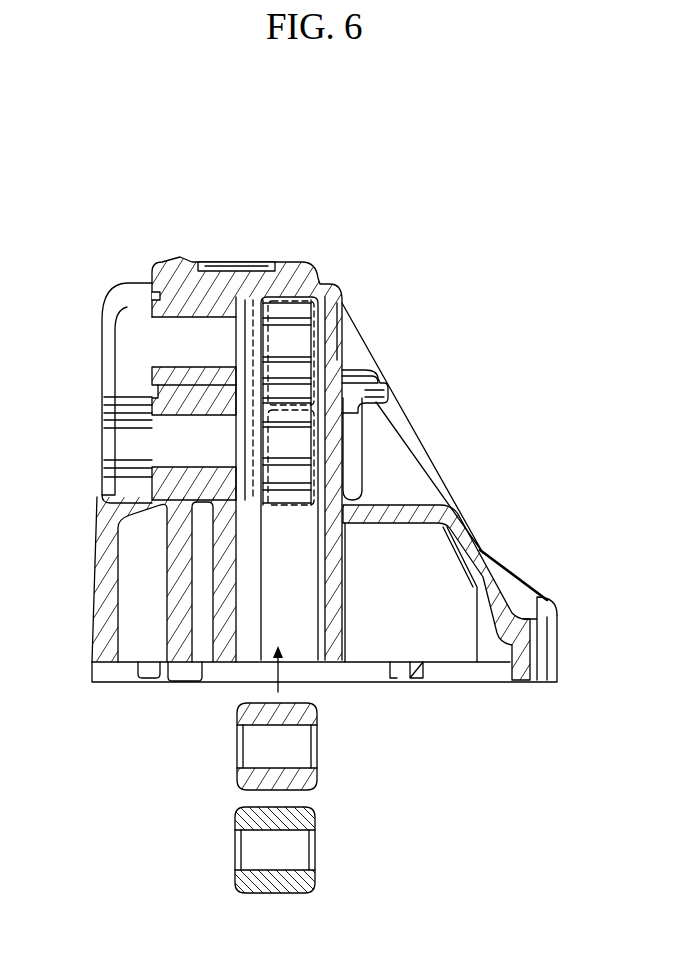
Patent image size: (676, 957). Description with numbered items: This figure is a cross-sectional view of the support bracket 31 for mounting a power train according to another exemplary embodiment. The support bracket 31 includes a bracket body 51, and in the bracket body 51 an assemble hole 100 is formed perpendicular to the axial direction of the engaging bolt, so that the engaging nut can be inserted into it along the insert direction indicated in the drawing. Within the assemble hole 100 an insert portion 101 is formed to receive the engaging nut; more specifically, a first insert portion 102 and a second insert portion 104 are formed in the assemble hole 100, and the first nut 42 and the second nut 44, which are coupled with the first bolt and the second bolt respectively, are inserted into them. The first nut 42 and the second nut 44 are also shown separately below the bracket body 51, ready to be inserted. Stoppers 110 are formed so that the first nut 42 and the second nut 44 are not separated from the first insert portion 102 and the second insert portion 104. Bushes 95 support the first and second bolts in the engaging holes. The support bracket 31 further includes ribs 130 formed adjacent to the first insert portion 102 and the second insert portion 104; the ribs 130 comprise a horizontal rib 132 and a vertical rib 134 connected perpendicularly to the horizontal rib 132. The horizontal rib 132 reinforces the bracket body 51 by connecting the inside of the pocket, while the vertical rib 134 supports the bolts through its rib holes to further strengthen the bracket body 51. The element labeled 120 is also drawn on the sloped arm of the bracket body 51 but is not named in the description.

The support bracket 31 is at (352, 244).
The first nut 42 is at (253, 300).
The second nut 44 is at (357, 467).
The bracket body 51 is at (455, 672).
The bushes 95 is at (160, 410).
The assemble hole 100 is at (250, 556).
The insert portion 101 is at (428, 285).
The first insert portion 102 is at (295, 338).
The second insert portion 104 is at (302, 438).
The stoppers 110 is at (277, 497).
The elastic arm 120 is at (462, 485).
The ribs 130 is at (476, 350).
The horizontal rib 132 is at (372, 397).
The vertical rib 134 is at (345, 377).